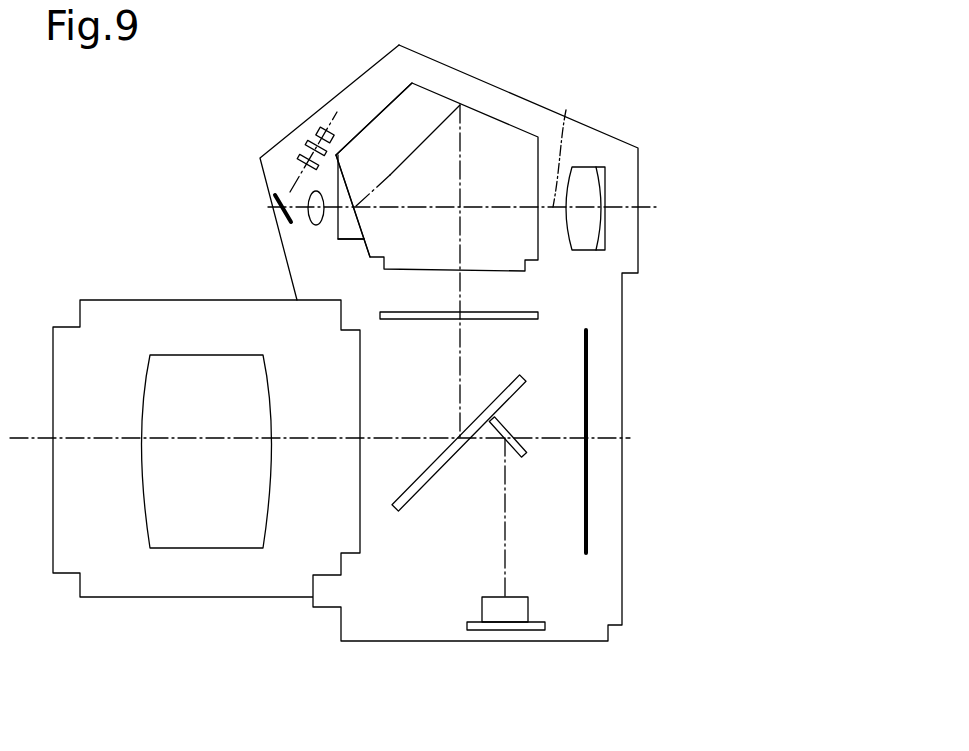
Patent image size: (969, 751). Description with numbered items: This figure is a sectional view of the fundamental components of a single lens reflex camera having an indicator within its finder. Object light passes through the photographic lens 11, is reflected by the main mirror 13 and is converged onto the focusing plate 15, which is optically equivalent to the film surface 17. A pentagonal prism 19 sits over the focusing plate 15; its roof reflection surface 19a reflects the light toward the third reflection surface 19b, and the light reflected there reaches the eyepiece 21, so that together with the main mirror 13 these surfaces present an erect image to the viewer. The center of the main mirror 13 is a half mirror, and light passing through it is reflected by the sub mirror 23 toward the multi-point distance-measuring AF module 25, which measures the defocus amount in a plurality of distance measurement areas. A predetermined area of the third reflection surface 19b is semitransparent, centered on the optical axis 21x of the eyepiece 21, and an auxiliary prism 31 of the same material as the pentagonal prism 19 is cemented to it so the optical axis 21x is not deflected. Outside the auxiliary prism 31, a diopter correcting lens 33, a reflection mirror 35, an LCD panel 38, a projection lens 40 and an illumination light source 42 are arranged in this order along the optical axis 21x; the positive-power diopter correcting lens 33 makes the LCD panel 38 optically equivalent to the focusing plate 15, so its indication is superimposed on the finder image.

The photographic lens 11 is at (187, 543).
The main mirror 13 is at (527, 384).
The focusing plate 15 is at (538, 316).
The film surface 17 is at (588, 497).
The pentagonal prism 19 is at (508, 128).
The roof reflection surface 19a is at (430, 105).
The third reflection surface 19b is at (364, 235).
The eyepiece 21 is at (590, 173).
The optical axis of the eyepiece 21x is at (574, 147).
The sub mirror 23 is at (499, 427).
The multi-point distance-measuring AF module 25 is at (505, 630).
The auxiliary prism 31 is at (332, 238).
The diopter correcting lens 33 is at (316, 226).
The reflection mirror 35 is at (272, 200).
The LCD panel 38 is at (300, 158).
The projection lens 40 is at (311, 145).
The illumination light source 42 is at (328, 130).